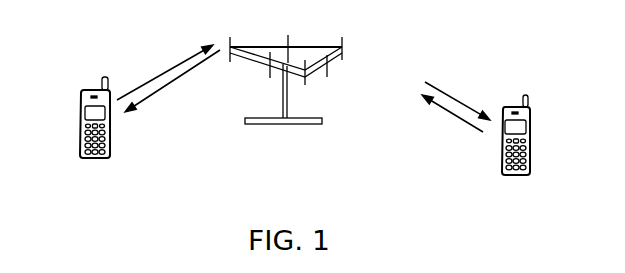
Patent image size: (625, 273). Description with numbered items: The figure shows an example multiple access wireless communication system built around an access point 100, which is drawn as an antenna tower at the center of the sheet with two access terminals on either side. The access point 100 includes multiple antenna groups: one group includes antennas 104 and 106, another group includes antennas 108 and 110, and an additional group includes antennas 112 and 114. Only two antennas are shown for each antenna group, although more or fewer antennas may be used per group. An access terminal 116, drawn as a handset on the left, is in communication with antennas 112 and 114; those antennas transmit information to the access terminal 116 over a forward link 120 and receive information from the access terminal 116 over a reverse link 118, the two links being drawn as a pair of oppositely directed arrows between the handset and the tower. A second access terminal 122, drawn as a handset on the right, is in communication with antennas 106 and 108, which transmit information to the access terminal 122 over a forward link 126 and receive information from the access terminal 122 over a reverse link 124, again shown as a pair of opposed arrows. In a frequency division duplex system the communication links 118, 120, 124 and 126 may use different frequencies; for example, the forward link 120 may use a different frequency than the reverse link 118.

The access point 100 is at (296, 125).
The antenna 104 is at (306, 84).
The antenna 106 is at (328, 70).
The antenna 108 is at (344, 50).
The antenna 110 is at (288, 35).
The antenna 112 is at (230, 37).
The antenna 114 is at (270, 73).
The access terminal 116 is at (80, 103).
The reverse link 118 is at (172, 63).
The forward link 120 is at (162, 93).
The access terminal 122 is at (531, 125).
The reverse link 124 is at (460, 122).
The forward link 126 is at (456, 97).